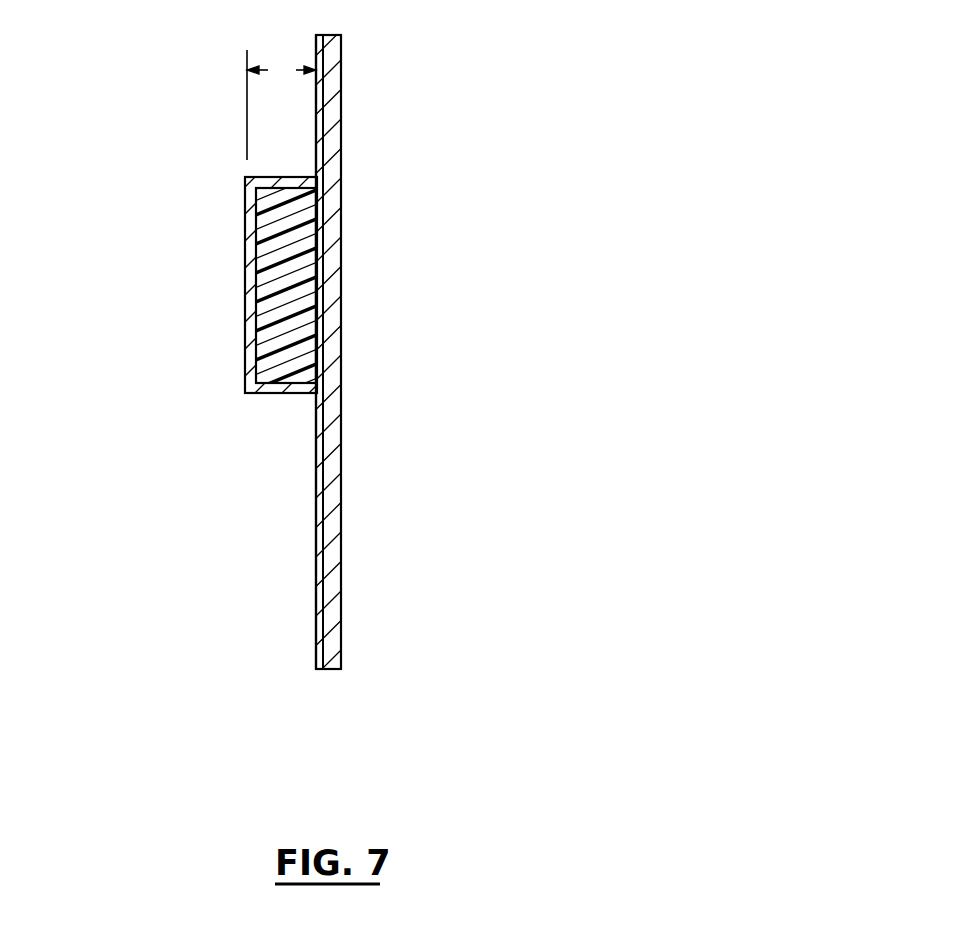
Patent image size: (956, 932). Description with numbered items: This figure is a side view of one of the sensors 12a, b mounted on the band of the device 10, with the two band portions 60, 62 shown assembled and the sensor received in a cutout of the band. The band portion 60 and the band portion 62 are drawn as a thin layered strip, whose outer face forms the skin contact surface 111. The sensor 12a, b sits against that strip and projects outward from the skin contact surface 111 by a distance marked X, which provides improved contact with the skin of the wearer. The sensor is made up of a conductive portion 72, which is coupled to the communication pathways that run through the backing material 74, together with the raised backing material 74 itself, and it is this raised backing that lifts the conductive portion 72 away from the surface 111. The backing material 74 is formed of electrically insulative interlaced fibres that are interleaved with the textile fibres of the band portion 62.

The vehicle component assembly 10 is at (545, 178).
The sensors 12a, b is at (182, 369).
The band portion 60 is at (342, 635).
The band portion 62 is at (316, 582).
The conductive portion 72 is at (245, 292).
The backing material 74 is at (287, 305).
The skin contact surface 111 is at (316, 497).